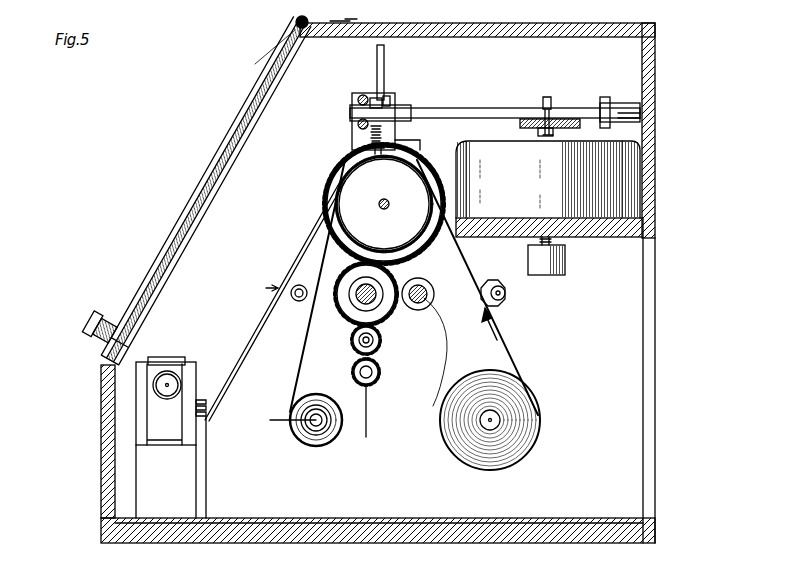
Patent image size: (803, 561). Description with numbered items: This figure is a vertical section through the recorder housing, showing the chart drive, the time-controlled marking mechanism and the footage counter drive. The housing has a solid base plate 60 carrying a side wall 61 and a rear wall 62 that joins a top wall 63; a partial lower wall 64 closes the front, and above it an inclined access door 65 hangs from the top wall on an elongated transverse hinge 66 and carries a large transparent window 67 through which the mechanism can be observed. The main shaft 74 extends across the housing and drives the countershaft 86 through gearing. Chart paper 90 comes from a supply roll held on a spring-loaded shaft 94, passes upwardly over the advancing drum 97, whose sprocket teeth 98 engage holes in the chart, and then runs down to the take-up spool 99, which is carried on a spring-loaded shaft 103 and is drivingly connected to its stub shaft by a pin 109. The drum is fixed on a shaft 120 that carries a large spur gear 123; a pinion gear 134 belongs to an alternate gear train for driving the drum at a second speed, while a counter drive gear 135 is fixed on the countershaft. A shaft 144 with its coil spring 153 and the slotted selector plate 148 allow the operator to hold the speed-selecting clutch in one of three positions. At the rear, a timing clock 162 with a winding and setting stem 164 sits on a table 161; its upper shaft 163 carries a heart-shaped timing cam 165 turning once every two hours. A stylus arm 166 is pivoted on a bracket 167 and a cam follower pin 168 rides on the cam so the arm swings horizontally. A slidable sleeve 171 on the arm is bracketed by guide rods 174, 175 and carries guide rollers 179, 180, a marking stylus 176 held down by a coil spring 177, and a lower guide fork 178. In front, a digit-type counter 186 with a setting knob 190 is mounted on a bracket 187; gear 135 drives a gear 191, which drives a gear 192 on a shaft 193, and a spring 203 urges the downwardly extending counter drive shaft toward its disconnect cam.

The base plate 60 is at (500, 520).
The side wall 61 is at (618, 73).
The rear wall 62 is at (650, 213).
The top wall 63 is at (540, 26).
The lower wall 64 is at (103, 432).
The access door 65 is at (270, 55).
The hinge 66 is at (299, 19).
The window 67 is at (192, 200).
The main shaft 74 is at (436, 340).
The countershaft 86 is at (366, 292).
The chart paper 90 is at (310, 366).
The shaft 94 is at (500, 417).
The advancing drum 97 is at (345, 185).
The sprocket teeth 98 is at (340, 200).
The take-up spool 99 is at (306, 438).
The shaft 103 is at (318, 440).
The pin 109 is at (286, 421).
The shaft 120 is at (389, 207).
The spur gear 123 is at (430, 248).
The pinion gear 134 is at (394, 310).
The counter drive gear 135 is at (350, 318).
The shaft 144 is at (296, 302).
The selector plate 148 is at (262, 318).
The coil spring 153 is at (266, 289).
The table 161 is at (612, 238).
The timing clock 162 is at (598, 163).
The shaft 163 is at (538, 133).
The winding and setting stem 164 is at (566, 266).
The timing cam 165 is at (560, 118).
The stylus arm 166 is at (458, 108).
The bracket 167 is at (628, 112).
The cam follower pin 168 is at (545, 97).
The sleeve 171 is at (382, 107).
The guide rod 174 is at (357, 100).
The guide rod 175 is at (352, 112).
The marking stylus 176 is at (377, 60).
The coil spring 177 is at (357, 124).
The guide fork 178 is at (372, 146).
The guide roller 179 is at (390, 96).
The guide roller 180 is at (398, 130).
The counter 186 is at (160, 357).
The bracket 187 is at (176, 487).
The setting knob 190 is at (167, 381).
The gear 191 is at (380, 344).
The gear 192 is at (366, 430).
The shaft 193 is at (366, 372).
The spring 203 is at (206, 400).